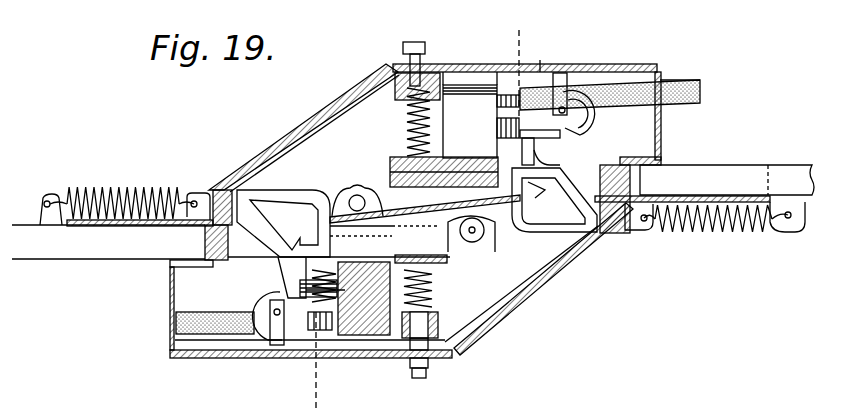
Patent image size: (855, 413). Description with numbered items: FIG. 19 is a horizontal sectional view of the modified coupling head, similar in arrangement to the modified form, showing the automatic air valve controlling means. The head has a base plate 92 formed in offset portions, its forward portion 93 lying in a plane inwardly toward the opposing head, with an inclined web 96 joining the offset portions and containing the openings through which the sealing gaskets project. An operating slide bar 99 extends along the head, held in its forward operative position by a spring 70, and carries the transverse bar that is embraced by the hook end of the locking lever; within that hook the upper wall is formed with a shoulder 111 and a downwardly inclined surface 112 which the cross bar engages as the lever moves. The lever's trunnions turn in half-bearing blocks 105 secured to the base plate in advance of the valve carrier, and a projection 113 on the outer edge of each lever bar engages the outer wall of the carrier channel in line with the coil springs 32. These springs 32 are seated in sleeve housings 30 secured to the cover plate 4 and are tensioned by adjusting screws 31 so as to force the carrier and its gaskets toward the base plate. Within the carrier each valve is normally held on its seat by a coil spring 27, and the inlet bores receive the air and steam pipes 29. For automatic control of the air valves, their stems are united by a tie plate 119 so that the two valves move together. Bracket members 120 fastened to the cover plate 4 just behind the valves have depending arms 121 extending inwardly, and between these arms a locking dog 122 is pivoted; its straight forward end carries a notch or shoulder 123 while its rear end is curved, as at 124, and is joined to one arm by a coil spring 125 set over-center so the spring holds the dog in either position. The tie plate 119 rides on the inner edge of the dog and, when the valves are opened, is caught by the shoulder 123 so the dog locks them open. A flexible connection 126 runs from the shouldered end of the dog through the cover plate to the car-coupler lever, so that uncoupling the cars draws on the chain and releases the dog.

The cover plate 4 is at (653, 64).
The coil spring 27 is at (356, 222).
The air and steam pipes 29 is at (683, 93).
The sleeve housings 30 is at (438, 326).
The adjusting screws 31 is at (430, 372).
The coil springs 32 is at (408, 108).
The spring 70 is at (100, 190).
The base plate 92 is at (676, 236).
The forward portion 93 is at (357, 190).
The inclined web 96 is at (447, 252).
The operating slide bar 99 is at (95, 262).
The half-bearing blocks 105 is at (338, 203).
The shoulder 111 is at (548, 205).
The downwardly inclined surface 112 is at (553, 203).
The offset or projection 113 is at (406, 243).
The tie plate 119 is at (545, 152).
The bracket members 120 is at (566, 82).
The depending arms 121 is at (553, 88).
The locking dog 122 is at (503, 103).
The notch or shoulder 123 is at (505, 138).
The curved portion 124 is at (588, 122).
The coil spring 125 is at (586, 108).
The flexible connection 126 is at (516, 40).